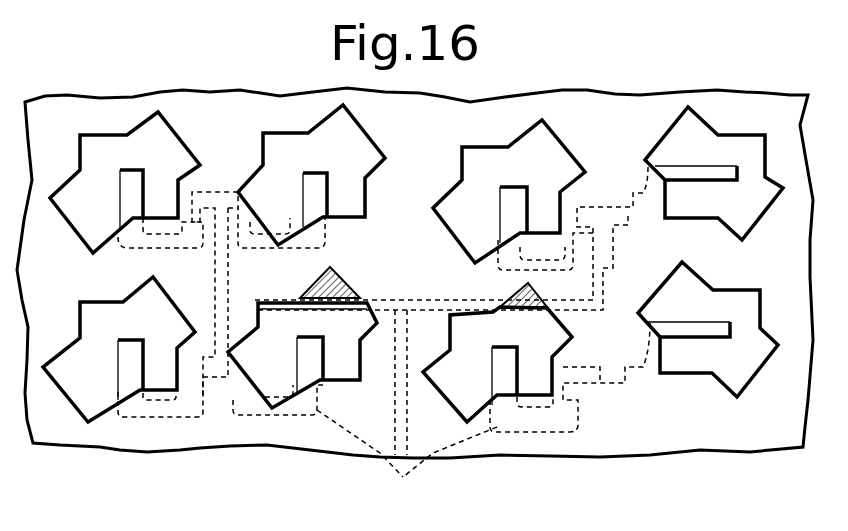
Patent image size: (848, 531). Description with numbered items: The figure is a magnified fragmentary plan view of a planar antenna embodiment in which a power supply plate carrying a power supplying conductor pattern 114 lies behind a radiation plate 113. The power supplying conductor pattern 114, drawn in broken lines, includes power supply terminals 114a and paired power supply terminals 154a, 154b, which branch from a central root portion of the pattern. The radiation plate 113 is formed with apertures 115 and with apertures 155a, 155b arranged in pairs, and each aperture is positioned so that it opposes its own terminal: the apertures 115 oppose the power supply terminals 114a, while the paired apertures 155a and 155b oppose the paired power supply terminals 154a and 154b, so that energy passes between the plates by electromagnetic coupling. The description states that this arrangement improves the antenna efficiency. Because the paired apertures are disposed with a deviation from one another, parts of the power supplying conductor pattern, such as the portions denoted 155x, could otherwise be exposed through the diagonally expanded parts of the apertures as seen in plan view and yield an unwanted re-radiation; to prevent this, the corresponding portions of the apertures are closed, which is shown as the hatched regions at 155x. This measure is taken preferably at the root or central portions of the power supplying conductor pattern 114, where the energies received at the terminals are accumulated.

The radiation plate 113 is at (746, 270).
The power supplying conductor pattern 114 is at (403, 477).
The power supply terminals 114a is at (300, 352).
The apertures 115 is at (268, 165).
The paired power supply terminal 154a is at (507, 365).
The paired power supply terminal 154b is at (702, 333).
The paired aperture 155a is at (522, 145).
The paired aperture 155b is at (697, 140).
The exposed parts of the power supply terminals 155x is at (328, 268).